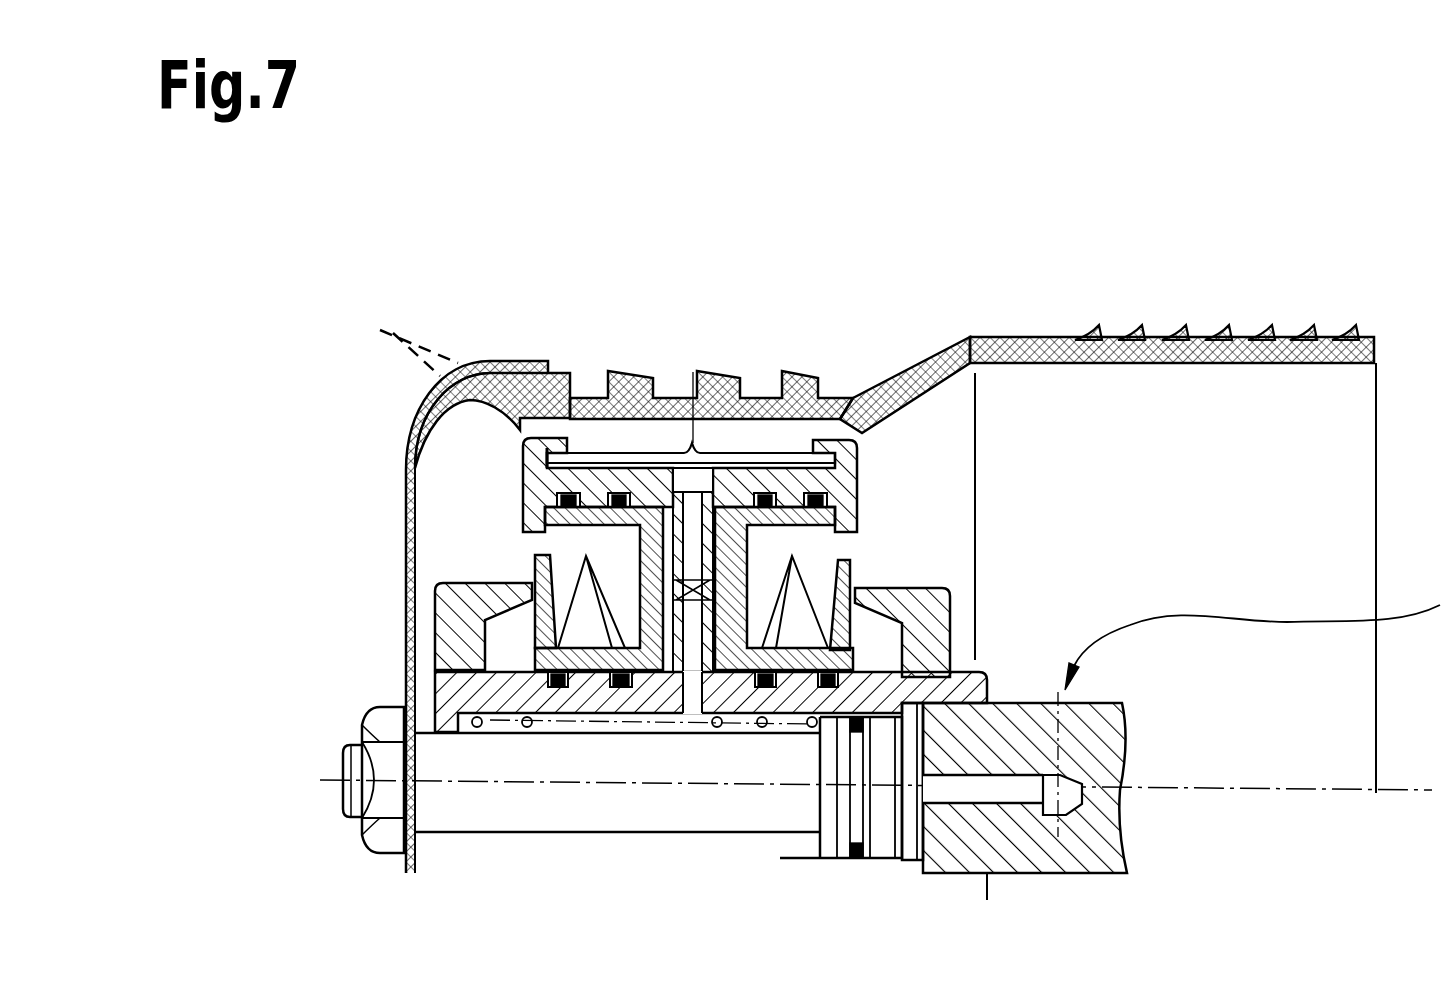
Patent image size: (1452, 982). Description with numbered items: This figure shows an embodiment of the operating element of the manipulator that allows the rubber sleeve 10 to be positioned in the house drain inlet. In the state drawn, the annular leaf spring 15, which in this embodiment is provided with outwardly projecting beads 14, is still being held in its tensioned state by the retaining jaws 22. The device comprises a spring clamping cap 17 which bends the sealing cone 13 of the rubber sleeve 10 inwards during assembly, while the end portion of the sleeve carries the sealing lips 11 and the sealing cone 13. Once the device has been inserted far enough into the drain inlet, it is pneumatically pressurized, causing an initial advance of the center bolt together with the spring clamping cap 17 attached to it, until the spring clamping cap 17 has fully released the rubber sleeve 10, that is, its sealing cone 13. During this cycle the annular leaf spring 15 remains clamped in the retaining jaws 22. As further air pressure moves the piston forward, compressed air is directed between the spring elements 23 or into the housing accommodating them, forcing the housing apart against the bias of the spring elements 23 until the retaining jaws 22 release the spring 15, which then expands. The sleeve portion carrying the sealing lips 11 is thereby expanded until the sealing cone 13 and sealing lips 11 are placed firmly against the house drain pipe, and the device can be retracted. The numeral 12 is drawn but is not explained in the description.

The rubber sleeve 10 is at (913, 370).
The sealing lips 11 is at (618, 377).
The barbed teeth 12 is at (1247, 340).
The sealing cone 13 is at (432, 357).
The outwardly projecting beads 14 is at (712, 372).
The annular leaf spring 15 is at (592, 453).
The spring clamping cap 17 is at (404, 485).
The retaining jaws 22 is at (852, 400).
The spring elements 23 is at (795, 573).